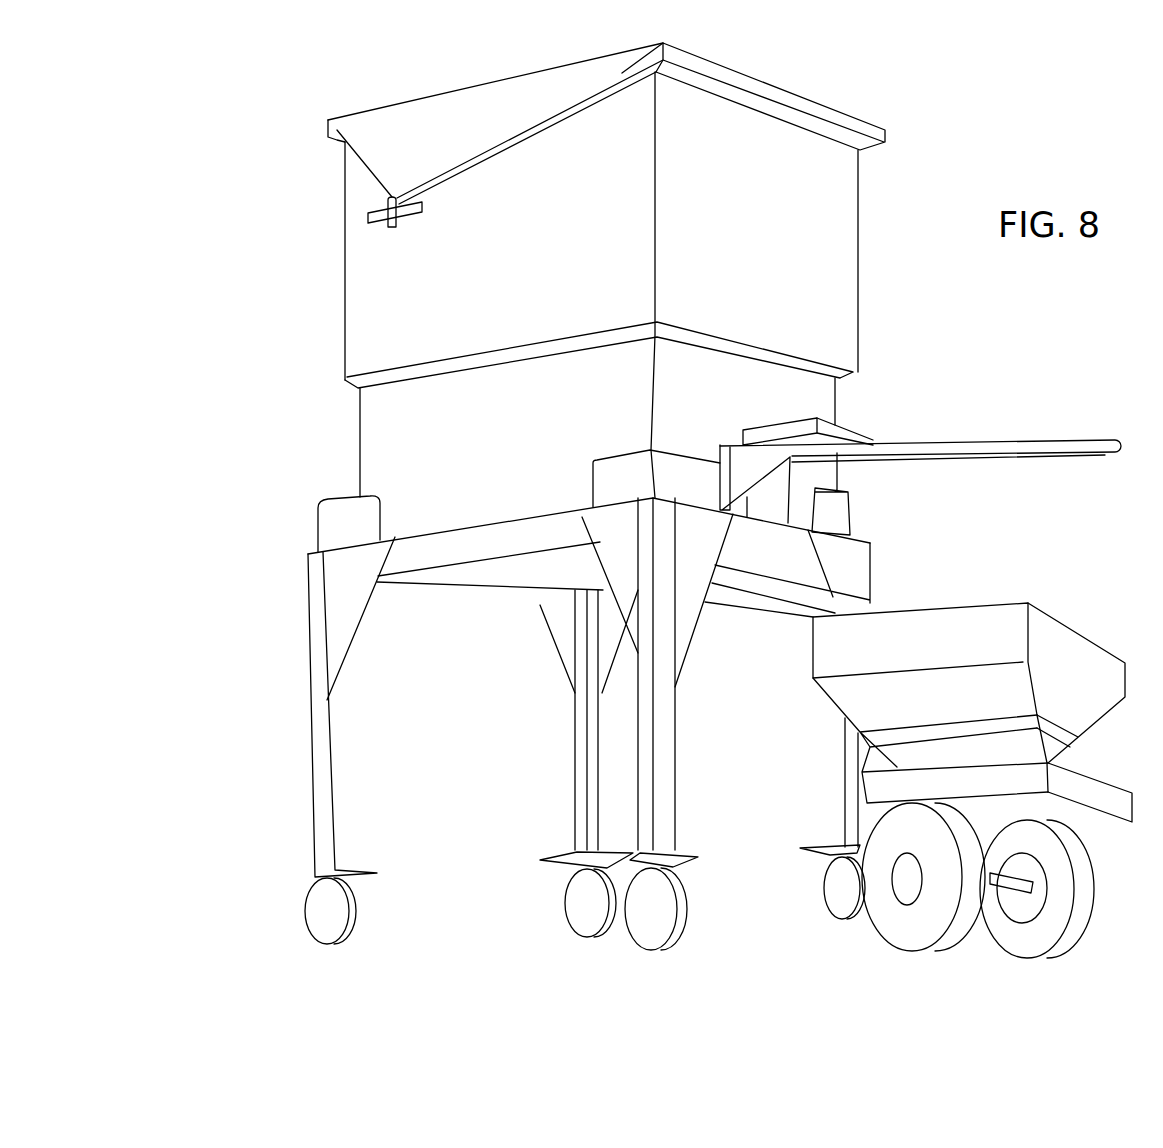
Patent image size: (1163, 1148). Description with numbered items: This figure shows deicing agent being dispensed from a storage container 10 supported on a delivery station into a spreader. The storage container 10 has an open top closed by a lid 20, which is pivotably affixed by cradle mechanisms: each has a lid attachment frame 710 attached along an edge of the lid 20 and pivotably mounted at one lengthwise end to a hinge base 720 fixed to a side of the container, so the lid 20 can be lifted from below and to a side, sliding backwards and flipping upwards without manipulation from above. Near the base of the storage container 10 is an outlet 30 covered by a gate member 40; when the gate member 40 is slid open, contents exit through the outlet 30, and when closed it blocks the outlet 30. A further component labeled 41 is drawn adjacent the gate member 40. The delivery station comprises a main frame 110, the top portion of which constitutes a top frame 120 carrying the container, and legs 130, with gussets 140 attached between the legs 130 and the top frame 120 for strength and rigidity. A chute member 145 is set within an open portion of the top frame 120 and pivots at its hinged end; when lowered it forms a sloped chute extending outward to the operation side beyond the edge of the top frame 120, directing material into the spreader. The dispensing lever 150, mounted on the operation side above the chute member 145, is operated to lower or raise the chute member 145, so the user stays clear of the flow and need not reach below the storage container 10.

The storage container 10 is at (858, 266).
The lid 20 is at (836, 106).
The lid attachment frame 710 is at (538, 124).
The hinge base 720 is at (397, 228).
The gate member 40 is at (771, 424).
The discharge gate 41 is at (858, 432).
The outlet 30 is at (791, 466).
The dispensing lever 150 is at (1052, 438).
The gussets 140 is at (870, 580).
The chute member 145 is at (752, 612).
The main frame 110 is at (428, 592).
The top frame 120 is at (332, 497).
The legs 130 is at (313, 768).